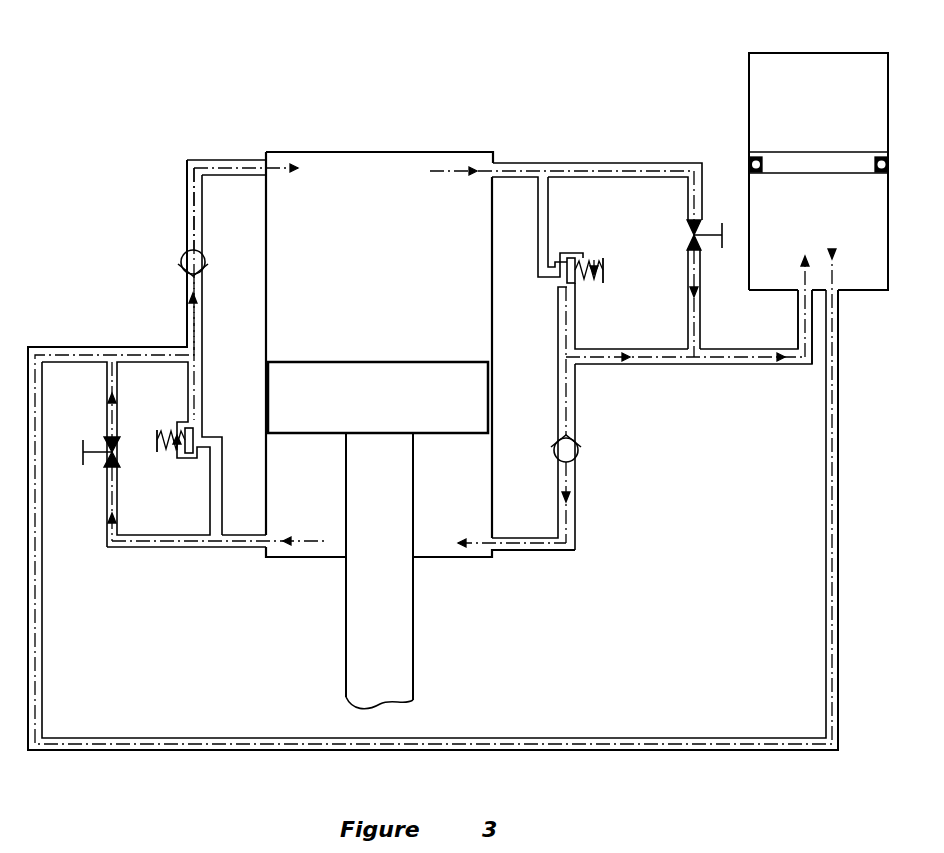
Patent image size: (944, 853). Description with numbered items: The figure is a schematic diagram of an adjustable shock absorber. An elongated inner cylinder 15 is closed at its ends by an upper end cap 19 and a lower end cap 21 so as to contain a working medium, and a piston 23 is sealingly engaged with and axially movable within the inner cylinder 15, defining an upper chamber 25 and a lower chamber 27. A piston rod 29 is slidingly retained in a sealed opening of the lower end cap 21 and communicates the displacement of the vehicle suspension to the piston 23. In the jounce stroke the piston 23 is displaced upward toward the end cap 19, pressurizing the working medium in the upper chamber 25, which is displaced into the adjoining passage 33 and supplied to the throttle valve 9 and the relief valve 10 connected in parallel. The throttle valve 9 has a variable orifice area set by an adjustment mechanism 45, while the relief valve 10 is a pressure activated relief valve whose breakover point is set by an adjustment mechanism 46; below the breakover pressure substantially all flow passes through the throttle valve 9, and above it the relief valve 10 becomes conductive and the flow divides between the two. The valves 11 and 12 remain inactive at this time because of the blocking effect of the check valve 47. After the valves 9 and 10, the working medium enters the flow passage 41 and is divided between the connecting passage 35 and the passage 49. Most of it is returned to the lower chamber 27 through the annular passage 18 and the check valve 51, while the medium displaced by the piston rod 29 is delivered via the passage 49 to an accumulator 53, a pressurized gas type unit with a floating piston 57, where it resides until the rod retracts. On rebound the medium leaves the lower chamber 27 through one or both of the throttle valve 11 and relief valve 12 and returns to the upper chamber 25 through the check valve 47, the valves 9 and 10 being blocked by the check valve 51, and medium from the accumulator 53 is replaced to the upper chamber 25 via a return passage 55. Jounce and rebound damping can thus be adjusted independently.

The throttle valve 9 is at (680, 243).
The relief valve 10 is at (590, 250).
The throttle valve 11 is at (104, 448).
The relief valve 12 is at (187, 470).
The inner cylinder 15 is at (490, 297).
The annular passage 18 is at (225, 545).
The upper end cap 19 is at (368, 152).
The lower end cap 21 is at (448, 559).
The piston 23 is at (368, 374).
The upper chamber 25 is at (366, 226).
The lower chamber 27 is at (318, 494).
The piston rod 29 is at (400, 620).
The passage 33 is at (640, 162).
The passage 35 is at (570, 378).
The flow passage 41 is at (645, 355).
The adjustment mechanism 45 is at (723, 240).
The adjustment mechanism 46 is at (605, 262).
The check valve 47 is at (190, 262).
The passage 49 is at (793, 363).
The check valve 51 is at (575, 455).
The accumulator 53 is at (728, 88).
The return passage 55 is at (615, 745).
The floating piston 57 is at (818, 157).